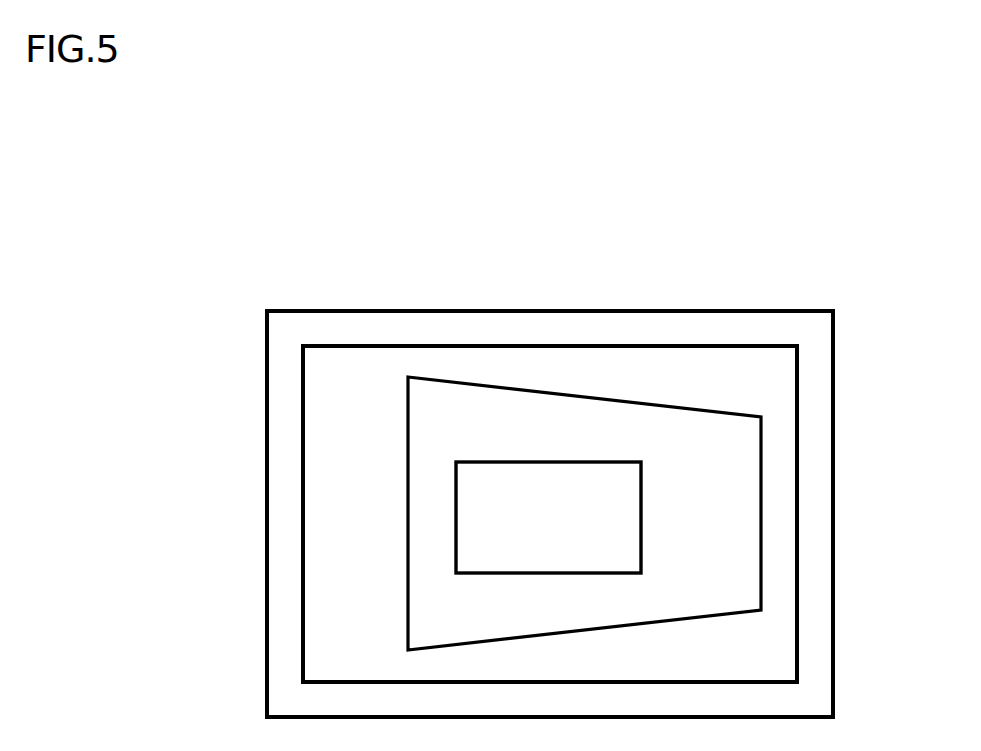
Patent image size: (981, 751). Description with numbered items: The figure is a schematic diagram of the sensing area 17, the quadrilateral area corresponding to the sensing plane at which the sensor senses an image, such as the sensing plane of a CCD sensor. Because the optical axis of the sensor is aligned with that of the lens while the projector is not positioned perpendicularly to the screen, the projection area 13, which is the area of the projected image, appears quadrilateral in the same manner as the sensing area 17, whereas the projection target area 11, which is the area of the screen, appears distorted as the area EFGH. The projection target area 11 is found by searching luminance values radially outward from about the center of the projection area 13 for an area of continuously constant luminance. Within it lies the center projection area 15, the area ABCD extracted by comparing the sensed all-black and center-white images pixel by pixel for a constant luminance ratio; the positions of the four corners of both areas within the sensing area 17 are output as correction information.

The projection target area 11 is at (762, 470).
The projection area 13 is at (677, 346).
The center projection area 15 is at (641, 518).
The sensing area 17 is at (364, 311).